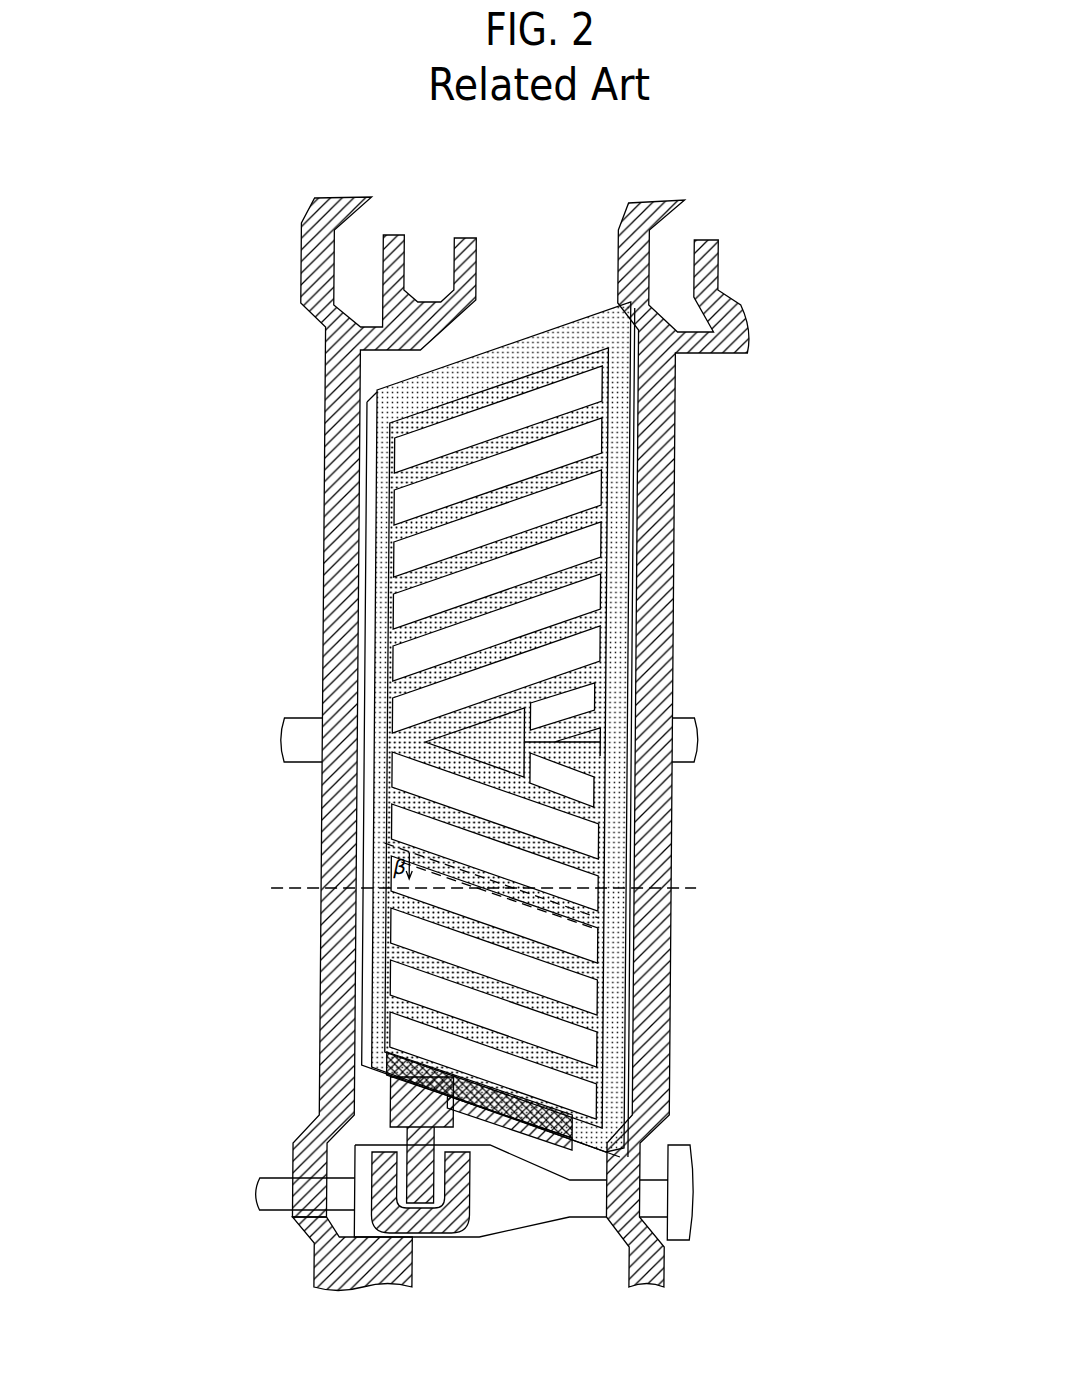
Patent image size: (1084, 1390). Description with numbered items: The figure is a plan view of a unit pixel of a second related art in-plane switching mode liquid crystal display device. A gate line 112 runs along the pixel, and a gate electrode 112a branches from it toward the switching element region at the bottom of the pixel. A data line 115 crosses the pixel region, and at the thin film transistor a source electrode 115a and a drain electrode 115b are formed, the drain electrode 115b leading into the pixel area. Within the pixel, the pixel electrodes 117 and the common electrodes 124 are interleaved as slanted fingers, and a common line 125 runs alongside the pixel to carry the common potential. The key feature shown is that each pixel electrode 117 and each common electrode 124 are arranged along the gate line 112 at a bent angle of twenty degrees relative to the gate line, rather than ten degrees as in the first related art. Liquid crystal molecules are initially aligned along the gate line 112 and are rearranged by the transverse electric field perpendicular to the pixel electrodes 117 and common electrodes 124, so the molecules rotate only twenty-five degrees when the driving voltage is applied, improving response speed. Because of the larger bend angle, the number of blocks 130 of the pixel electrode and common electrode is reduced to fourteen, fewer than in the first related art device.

The gate line 112 is at (577, 1203).
The gate electrode 112a is at (370, 1230).
The data line 115 is at (327, 938).
The source electrode 115a is at (473, 1187).
The drain electrode 115b is at (400, 1099).
The pixel electrode 117 is at (598, 582).
The common electrode 124 is at (598, 510).
The common line 125 is at (703, 722).
The block 130 is at (577, 1040).